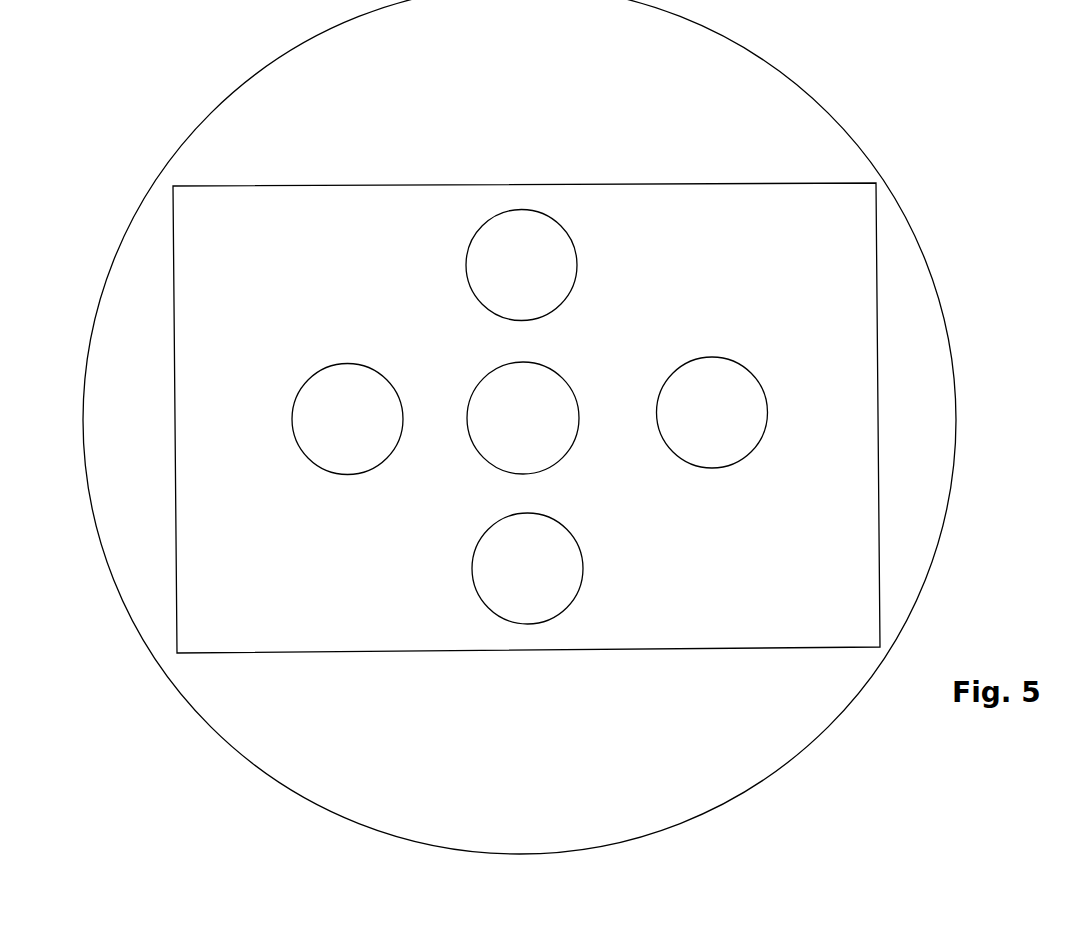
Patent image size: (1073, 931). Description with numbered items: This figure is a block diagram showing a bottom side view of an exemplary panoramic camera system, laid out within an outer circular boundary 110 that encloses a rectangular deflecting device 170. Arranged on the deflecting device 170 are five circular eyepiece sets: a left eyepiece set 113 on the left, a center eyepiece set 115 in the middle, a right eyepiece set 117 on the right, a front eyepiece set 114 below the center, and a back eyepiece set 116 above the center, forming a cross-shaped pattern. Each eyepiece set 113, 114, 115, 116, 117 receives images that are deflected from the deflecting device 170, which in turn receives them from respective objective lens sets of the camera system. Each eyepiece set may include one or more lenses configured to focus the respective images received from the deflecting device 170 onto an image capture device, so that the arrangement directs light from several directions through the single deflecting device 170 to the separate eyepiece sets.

The substrate 110 is at (113, 584).
The deflecting device 170 is at (383, 186).
The left eyepiece set 113 is at (295, 443).
The front eyepiece set 114 is at (471, 565).
The center eyepiece set 115 is at (574, 391).
The back eyepiece set 116 is at (578, 267).
The right eyepiece set 117 is at (712, 468).